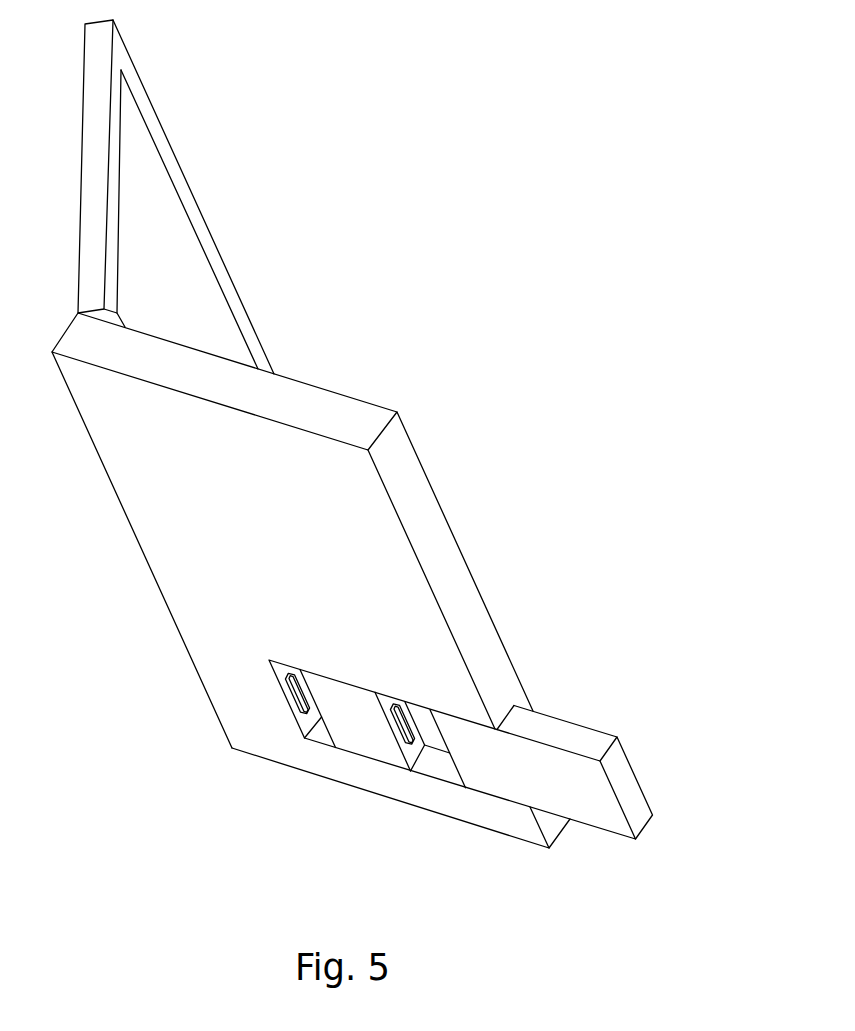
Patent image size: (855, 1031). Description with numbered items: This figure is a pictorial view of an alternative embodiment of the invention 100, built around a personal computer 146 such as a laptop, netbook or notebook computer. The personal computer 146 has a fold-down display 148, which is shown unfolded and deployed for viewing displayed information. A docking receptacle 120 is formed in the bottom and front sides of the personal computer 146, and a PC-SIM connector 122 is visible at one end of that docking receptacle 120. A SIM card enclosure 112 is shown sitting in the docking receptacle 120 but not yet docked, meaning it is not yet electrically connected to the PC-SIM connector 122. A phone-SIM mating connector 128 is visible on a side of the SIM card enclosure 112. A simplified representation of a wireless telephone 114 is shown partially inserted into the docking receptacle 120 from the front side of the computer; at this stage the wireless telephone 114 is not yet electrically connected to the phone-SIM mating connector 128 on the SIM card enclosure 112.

The alternative embodiment of the invention 100 is at (455, 70).
The SIM card enclosure 112 is at (396, 742).
The wireless telephone 114 is at (617, 737).
The docking receptacle 120 is at (505, 716).
The PC-SIM connector 122 is at (292, 671).
The phone-SIM mating connector 128 is at (399, 697).
The personal computer 146 is at (447, 513).
The fold-down display 148 is at (82, 87).